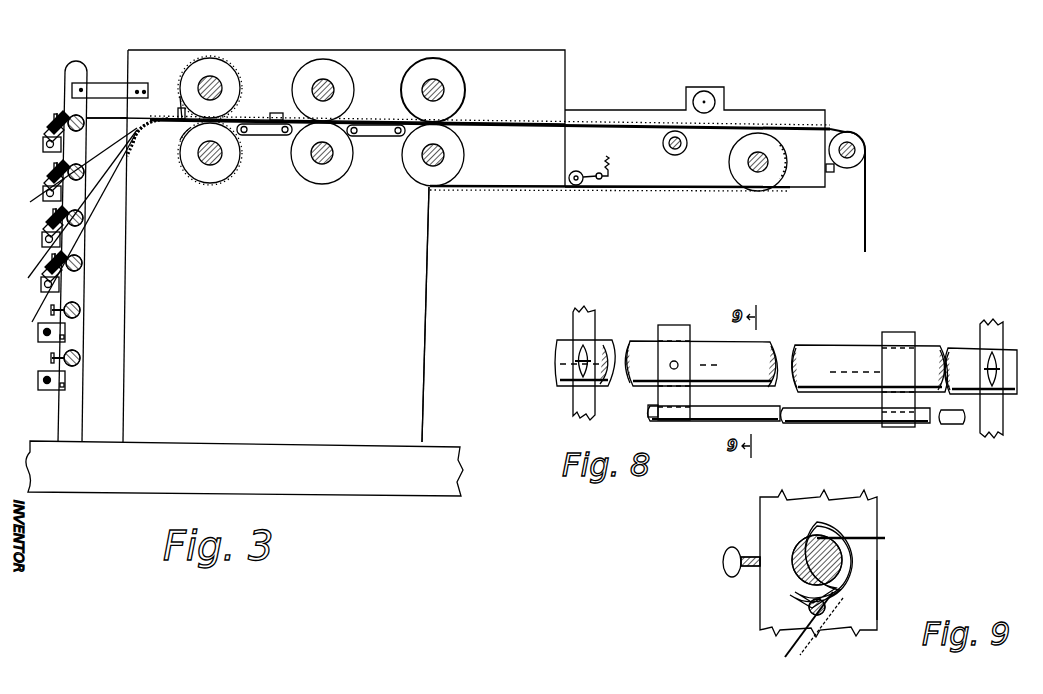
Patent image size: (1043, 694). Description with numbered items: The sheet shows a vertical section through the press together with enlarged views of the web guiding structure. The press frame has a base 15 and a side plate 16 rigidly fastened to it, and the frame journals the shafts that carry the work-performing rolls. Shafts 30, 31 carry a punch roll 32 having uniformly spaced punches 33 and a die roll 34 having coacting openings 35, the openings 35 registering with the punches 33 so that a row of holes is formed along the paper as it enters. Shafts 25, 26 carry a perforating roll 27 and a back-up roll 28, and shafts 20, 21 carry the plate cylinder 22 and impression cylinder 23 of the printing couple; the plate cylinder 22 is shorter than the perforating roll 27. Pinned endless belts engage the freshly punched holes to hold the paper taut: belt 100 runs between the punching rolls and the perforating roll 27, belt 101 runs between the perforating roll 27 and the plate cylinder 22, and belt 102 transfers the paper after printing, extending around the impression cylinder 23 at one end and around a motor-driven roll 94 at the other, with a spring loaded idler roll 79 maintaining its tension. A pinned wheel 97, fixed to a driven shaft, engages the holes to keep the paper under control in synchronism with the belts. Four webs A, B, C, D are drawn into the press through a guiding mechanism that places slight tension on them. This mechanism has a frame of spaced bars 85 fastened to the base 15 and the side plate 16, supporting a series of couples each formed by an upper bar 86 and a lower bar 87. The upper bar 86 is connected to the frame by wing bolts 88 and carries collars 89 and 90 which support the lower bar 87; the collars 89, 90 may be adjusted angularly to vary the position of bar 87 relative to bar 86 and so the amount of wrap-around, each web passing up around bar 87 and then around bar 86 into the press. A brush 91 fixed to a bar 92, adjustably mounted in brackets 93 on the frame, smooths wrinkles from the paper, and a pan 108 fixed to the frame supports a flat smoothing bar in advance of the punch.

In FIG. 3, the base 15 is at (443, 444).
In FIG. 3, the side plate 16 is at (427, 307).
In FIG. 3, the shaft 20 is at (435, 82).
In FIG. 3, the shaft 21 is at (426, 164).
In FIG. 3, the plate cylinder 22 is at (454, 70).
In FIG. 3, the impression cylinder 23 is at (456, 158).
In FIG. 3, the shaft 25 is at (325, 82).
In FIG. 3, the shaft 26 is at (324, 164).
In FIG. 3, the perforating roll 27 is at (305, 72).
In FIG. 3, the back-up roll 28 is at (317, 180).
In FIG. 3, the shaft 30 is at (207, 84).
In FIG. 3, the shaft 31 is at (203, 163).
In FIG. 3, the punch roll 32 is at (223, 64).
In FIG. 3, the punches 33 is at (184, 76).
In FIG. 3, the die roll 34 is at (217, 177).
In FIG. 3, the openings 35 is at (178, 155).
In FIG. 3, the spring loaded idler roll 79 is at (578, 171).
In FIG. 3, the bars 85 is at (68, 88).
In FIG. 8, the bars 85 is at (578, 402).
In FIG. 9, the bars 85 is at (880, 603).
In FIG. 8, the upper bar 86 is at (720, 385).
In FIG. 9, the upper bar 86 is at (834, 560).
In FIG. 8, the lower bar 87 is at (858, 422).
In FIG. 9, the lower bar 87 is at (808, 607).
In FIG. 8, the wing bolts 88 is at (577, 358).
In FIG. 9, the wing bolts 88 is at (733, 547).
In FIG. 8, the collar 89 is at (670, 328).
In FIG. 8, the collar 90 is at (893, 335).
In FIG. 3, the brush 91 is at (58, 120).
In FIG. 3, the bar 92 is at (44, 143).
In FIG. 3, the brackets 93 is at (66, 148).
In FIG. 3, the roll 94 is at (730, 165).
In FIG. 3, the pinned wheel 97 is at (849, 168).
In FIG. 3, the endless belt 100 is at (266, 140).
In FIG. 3, the endless belt 101 is at (383, 140).
In FIG. 3, the endless belt 102 is at (528, 190).
In FIG. 3, the pan 108 is at (147, 131).
In FIG. 3, the web A is at (118, 118).
In FIG. 3, the web B is at (83, 165).
In FIG. 3, the web C is at (82, 204).
In FIG. 3, the web D is at (84, 227).